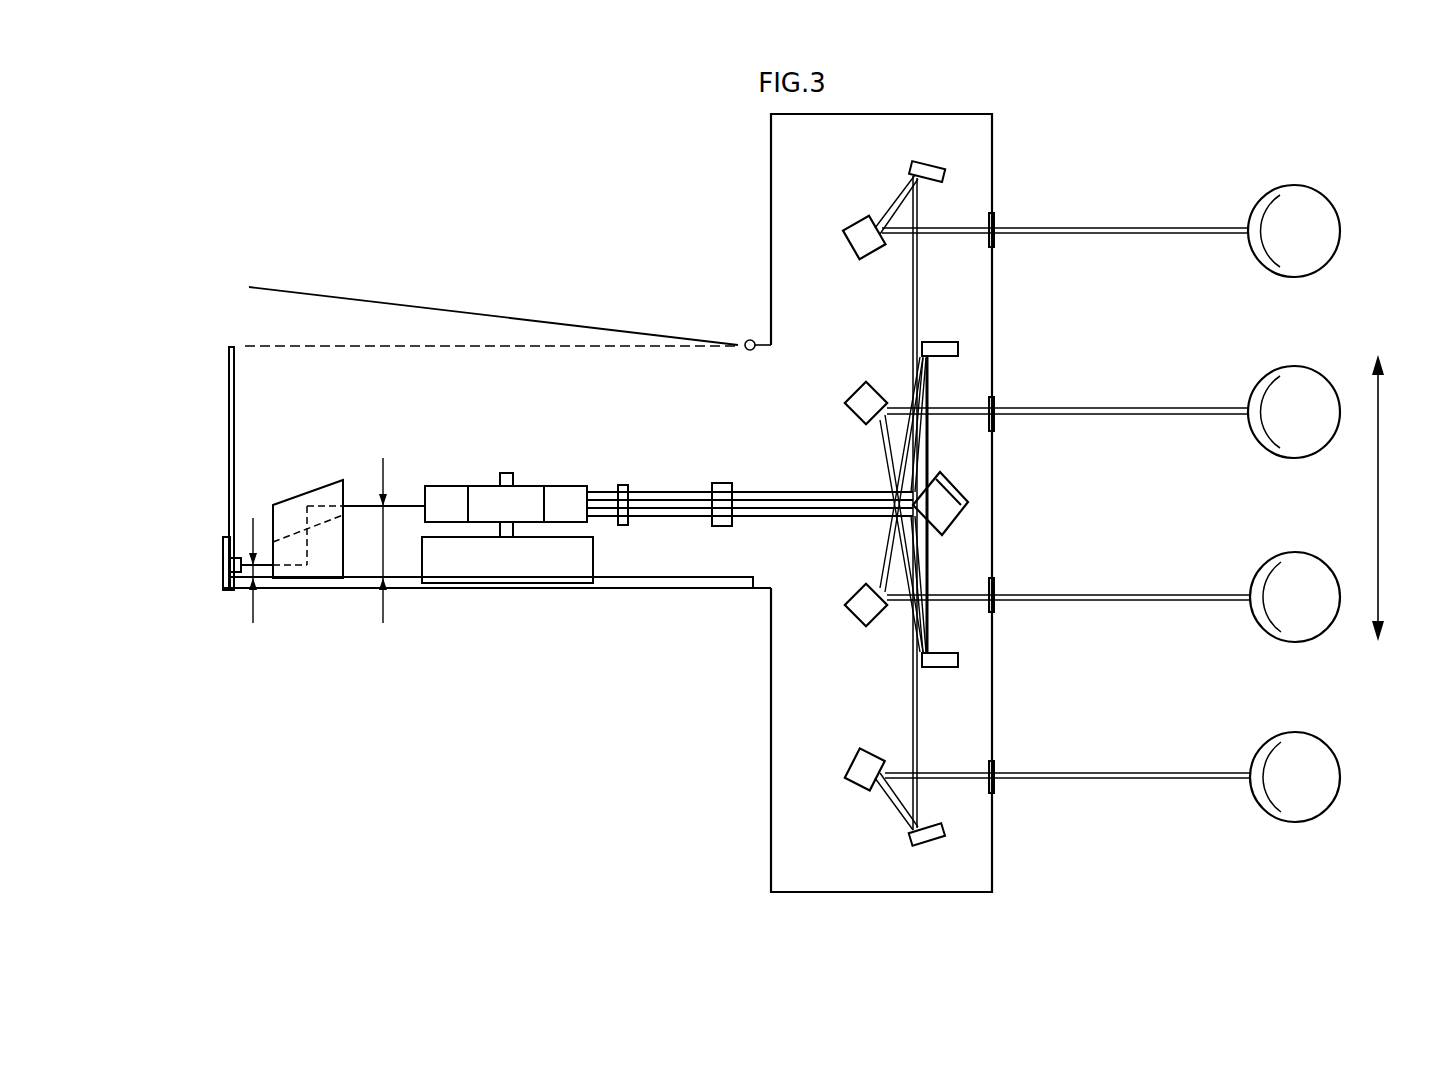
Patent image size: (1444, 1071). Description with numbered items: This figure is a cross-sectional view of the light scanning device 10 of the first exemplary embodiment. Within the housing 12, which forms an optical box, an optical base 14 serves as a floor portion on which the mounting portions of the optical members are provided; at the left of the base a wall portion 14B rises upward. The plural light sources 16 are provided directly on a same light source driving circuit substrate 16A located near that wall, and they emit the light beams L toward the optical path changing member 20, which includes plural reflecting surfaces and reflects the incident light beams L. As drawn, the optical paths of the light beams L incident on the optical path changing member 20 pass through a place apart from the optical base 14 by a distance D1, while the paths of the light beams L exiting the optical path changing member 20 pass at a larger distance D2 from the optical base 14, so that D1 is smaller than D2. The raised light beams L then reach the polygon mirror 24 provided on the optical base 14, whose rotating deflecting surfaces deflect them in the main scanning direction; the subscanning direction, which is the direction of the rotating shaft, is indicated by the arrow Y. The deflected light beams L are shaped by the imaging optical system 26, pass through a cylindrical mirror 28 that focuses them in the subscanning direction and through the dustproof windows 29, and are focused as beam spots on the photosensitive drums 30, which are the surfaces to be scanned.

The light scanning device 10 is at (240, 160).
The housing 12 is at (770, 248).
The optical base 14 is at (617, 563).
The reference wall 14B is at (229, 420).
The light sources 16 is at (222, 567).
The light source driving circuit substrate 16A is at (223, 590).
The optical path changing member 20 is at (317, 495).
The polygon mirror 24 is at (483, 495).
The imaging optical system 26 is at (622, 467).
The cylindrical mirror 28 is at (860, 777).
The dustproof windows 29 is at (998, 212).
The photosensitive drums 30 is at (1300, 200).
The distance D1 is at (256, 589).
The distance D2 is at (400, 552).
The light beams L is at (1140, 228).
The direction Y is at (1382, 425).